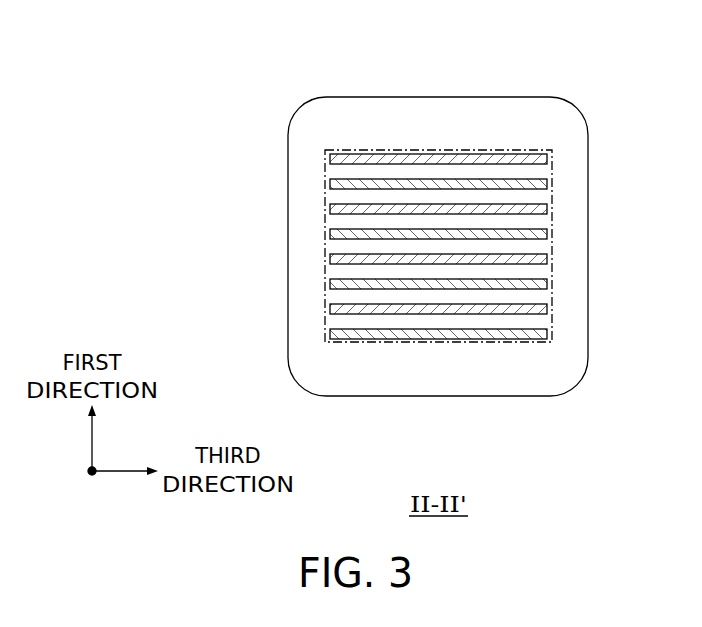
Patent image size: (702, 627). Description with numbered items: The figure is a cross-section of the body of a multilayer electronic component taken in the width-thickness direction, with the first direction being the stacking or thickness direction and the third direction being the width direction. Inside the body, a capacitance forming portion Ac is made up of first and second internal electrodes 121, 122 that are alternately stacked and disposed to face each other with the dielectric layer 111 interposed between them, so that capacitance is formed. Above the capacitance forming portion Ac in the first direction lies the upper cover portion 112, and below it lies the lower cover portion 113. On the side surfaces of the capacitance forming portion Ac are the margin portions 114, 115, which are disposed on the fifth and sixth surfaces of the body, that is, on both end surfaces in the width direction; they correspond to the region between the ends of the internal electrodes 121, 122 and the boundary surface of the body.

The dielectric layer 111 is at (366, 168).
The upper cover portion 112 is at (403, 113).
The lower cover portion 113 is at (405, 378).
The margin portion 114 is at (300, 332).
The margin portion 115 is at (575, 247).
The first internal electrode 121 is at (470, 158).
The second internal electrode 122 is at (510, 235).
The capacitance forming portion Ac is at (568, 330).